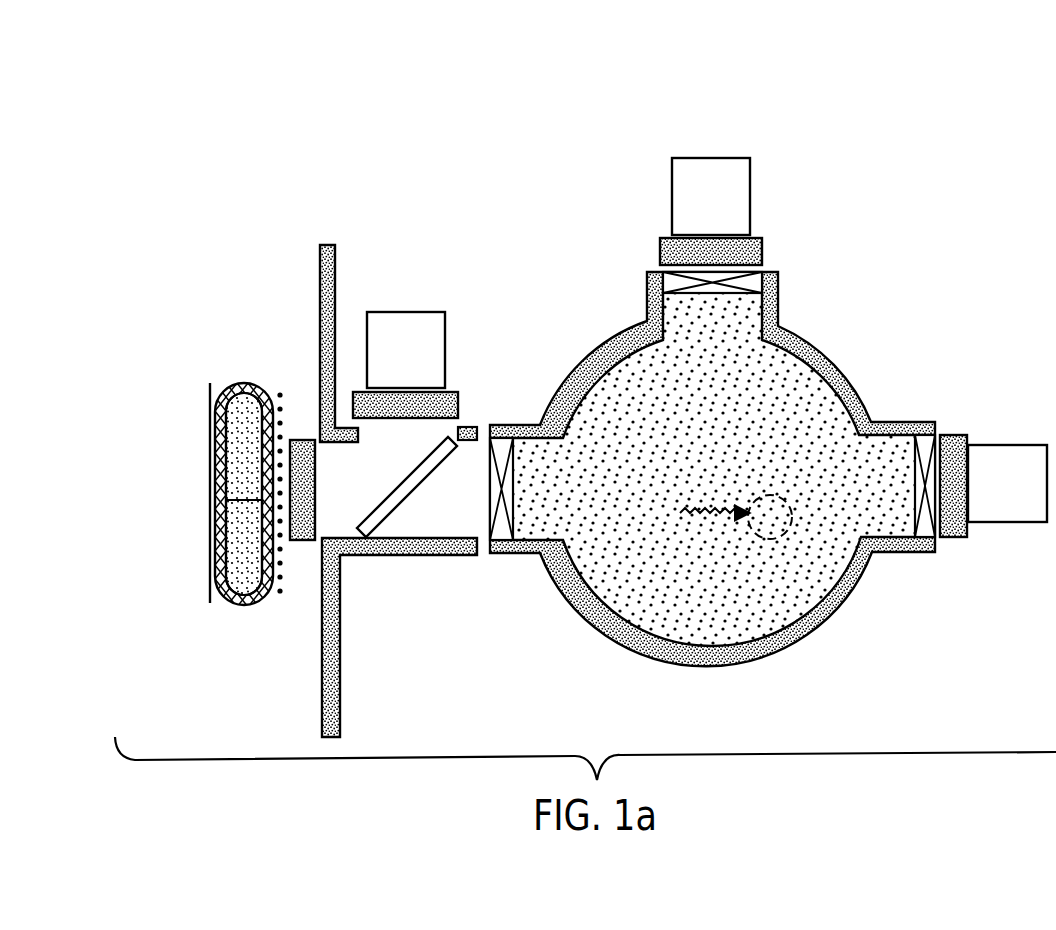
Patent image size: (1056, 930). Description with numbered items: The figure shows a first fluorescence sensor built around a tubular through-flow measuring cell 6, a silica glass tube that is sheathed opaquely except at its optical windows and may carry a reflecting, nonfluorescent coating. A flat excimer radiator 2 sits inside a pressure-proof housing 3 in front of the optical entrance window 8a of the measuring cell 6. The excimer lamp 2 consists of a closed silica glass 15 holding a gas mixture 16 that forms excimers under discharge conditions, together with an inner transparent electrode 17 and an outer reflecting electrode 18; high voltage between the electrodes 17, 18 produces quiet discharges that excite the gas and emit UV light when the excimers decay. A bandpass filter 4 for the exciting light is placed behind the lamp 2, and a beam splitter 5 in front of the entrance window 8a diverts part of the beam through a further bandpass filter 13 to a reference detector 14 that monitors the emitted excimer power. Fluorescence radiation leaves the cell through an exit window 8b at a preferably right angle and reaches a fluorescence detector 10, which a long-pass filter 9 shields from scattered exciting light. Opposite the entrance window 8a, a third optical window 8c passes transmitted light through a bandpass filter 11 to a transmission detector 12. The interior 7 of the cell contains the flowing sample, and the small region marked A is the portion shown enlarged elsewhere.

The excimer flat radiator 2 is at (238, 378).
The housing 3 is at (336, 266).
The bandpass filter 4 is at (308, 540).
The beam splitter 5 is at (378, 528).
The tubular through-flow measuring cell 6 is at (624, 658).
The chamber interior 7 is at (758, 612).
The optical entrance window 8a is at (500, 445).
The exit window 8b is at (755, 283).
The third optical window 8c is at (922, 440).
The long-pass filter 9 is at (762, 250).
The fluorescence detector 10 is at (711, 196).
The bandpass filter 11 is at (948, 438).
The transmission detector 12 is at (1007, 483).
The bandpass filter 13 is at (453, 392).
The reference detector 14 is at (406, 350).
The closed silica glass 15 is at (219, 417).
The gas mixture 16 is at (237, 465).
The inner transparent electrode 17 is at (277, 500).
The outer reflecting electrode 18 is at (215, 576).
The portion A is at (767, 540).